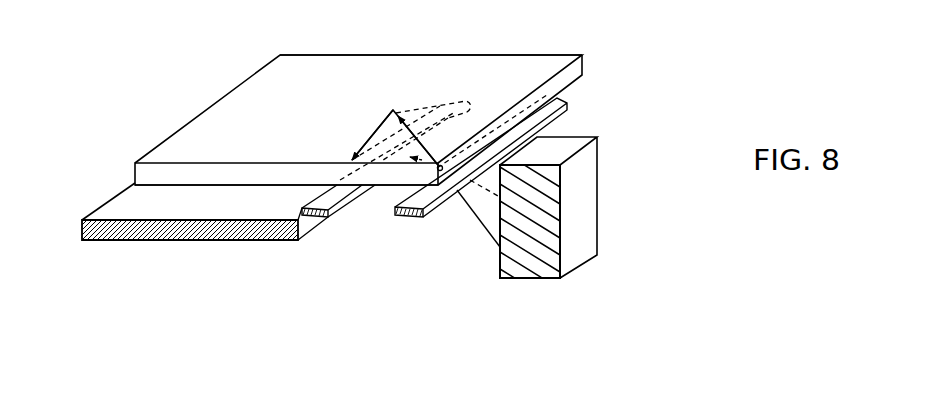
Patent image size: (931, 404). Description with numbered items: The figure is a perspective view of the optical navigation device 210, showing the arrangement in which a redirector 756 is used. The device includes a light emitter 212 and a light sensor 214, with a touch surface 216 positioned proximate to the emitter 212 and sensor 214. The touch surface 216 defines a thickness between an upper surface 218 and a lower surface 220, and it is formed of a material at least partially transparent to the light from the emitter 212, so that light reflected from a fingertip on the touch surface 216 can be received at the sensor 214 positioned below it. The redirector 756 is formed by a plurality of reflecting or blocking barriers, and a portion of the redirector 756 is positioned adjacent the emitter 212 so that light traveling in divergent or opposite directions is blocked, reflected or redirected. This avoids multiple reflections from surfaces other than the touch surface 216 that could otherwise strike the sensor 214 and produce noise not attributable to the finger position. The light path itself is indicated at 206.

The light beam / prism 206 is at (433, 118).
The optical navigation device 210 is at (128, 297).
The light emitter 212 is at (573, 220).
The light sensor 214 is at (207, 230).
The touch surface 216 is at (132, 173).
The upper surface 218 is at (293, 82).
The lower surface 220 is at (153, 188).
The redirector 756 is at (400, 232).